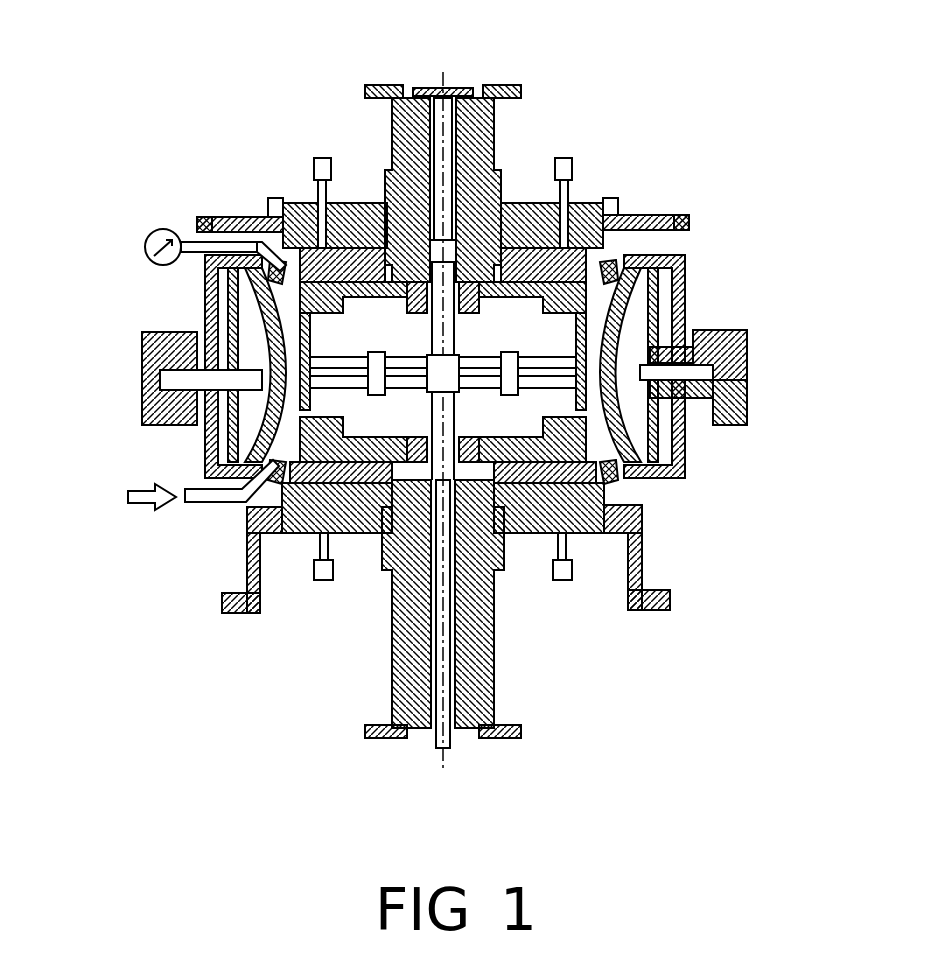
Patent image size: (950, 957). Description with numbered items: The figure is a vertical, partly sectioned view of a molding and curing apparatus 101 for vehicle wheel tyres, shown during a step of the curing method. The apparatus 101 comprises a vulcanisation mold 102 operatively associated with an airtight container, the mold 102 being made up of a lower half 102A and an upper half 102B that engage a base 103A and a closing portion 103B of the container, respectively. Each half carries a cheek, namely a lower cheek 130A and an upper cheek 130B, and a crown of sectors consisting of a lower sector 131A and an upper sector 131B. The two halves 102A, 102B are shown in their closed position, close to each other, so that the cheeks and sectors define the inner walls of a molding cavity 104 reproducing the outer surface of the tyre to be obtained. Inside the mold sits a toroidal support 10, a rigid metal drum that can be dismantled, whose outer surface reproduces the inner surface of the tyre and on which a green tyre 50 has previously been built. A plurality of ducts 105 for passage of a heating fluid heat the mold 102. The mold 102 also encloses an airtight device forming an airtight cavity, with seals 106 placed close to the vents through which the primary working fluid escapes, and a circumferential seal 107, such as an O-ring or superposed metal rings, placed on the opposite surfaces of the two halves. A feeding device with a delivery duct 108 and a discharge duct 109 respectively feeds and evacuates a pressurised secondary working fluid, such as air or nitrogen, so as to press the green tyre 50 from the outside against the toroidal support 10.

The molding and curing apparatus 101 is at (101, 158).
The toroidal support 10 is at (250, 440).
The green tyre 50 is at (748, 345).
The vulcanisation mold 102 is at (232, 322).
The lower half 102A is at (686, 467).
The upper half 102B is at (686, 303).
The base 103A is at (248, 552).
The closing portion 103B is at (245, 217).
The molding cavity 104 is at (540, 533).
The ducts 105 is at (215, 290).
The seals 106 is at (272, 270).
The circumferential seal 107 is at (165, 380).
The delivery duct 108 is at (180, 488).
The discharge duct 109 is at (197, 232).
The lower cheek 130A is at (360, 535).
The upper cheek 130B is at (360, 248).
The lower sector 131A is at (664, 500).
The upper sector 131B is at (607, 270).